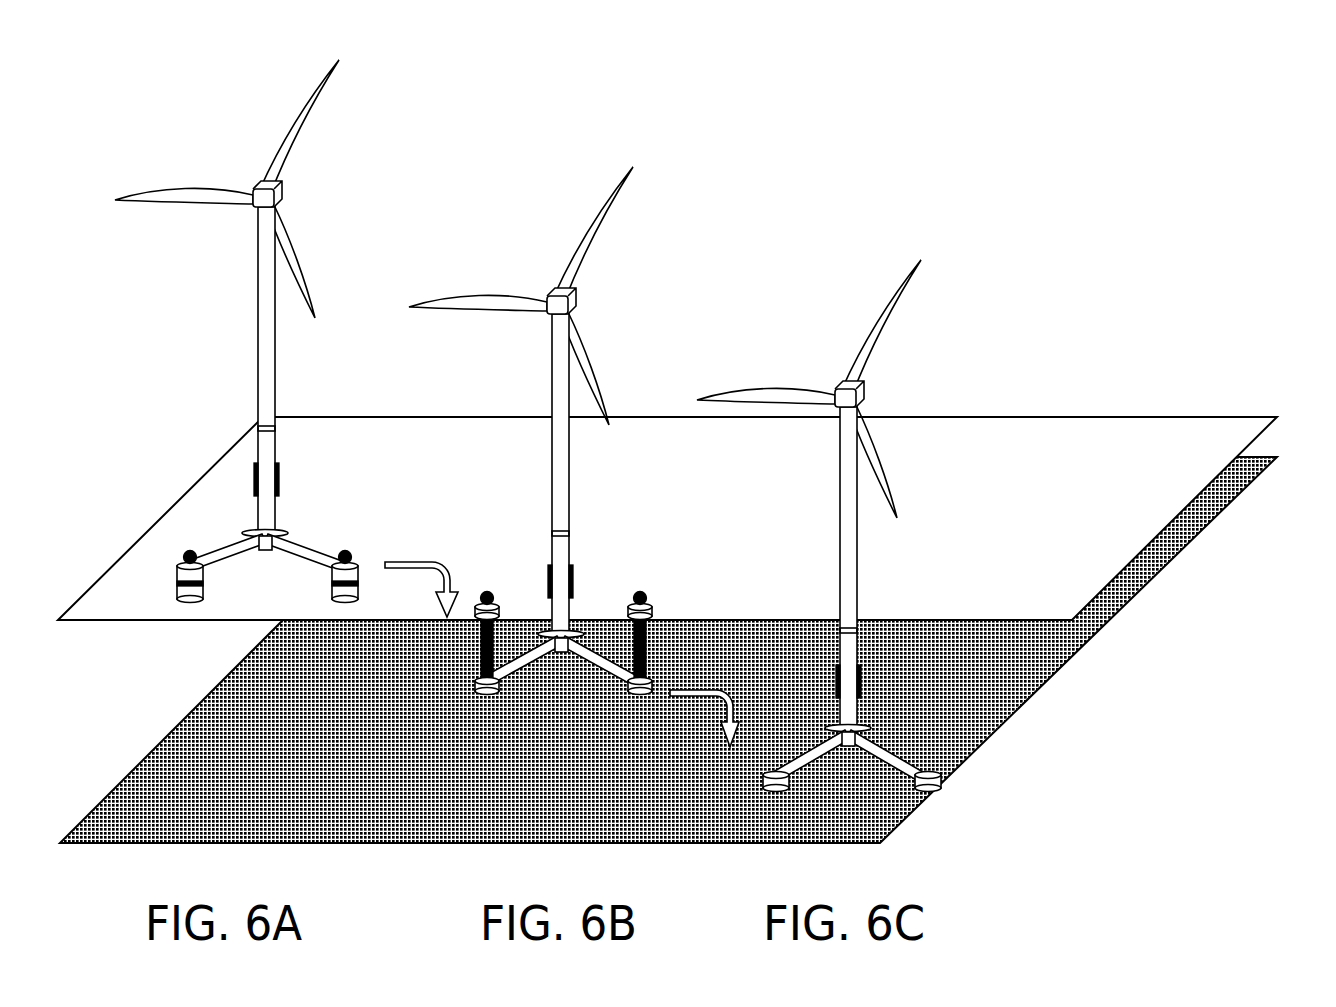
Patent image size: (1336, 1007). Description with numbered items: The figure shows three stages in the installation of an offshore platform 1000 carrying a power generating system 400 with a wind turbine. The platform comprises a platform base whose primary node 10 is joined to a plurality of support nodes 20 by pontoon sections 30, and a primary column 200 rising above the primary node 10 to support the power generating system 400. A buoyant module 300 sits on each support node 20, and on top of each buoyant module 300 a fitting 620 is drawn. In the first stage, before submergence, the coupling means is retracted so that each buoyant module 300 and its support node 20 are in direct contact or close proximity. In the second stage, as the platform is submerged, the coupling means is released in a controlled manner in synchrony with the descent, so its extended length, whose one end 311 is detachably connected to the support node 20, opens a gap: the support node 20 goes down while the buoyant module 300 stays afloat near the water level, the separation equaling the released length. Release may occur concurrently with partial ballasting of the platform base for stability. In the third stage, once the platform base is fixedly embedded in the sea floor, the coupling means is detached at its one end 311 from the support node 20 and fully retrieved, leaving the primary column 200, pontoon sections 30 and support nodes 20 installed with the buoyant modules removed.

In FIG. 6A, the offshore platform 1000 is at (279, 189).
In FIG. 6B, the offshore platform 1000 is at (565, 290).
In FIG. 6C, the offshore platform 1000 is at (809, 389).
In FIG. 6A, the power generating system 400 is at (316, 188).
In FIG. 6B, the power generating system 400 is at (612, 289).
In FIG. 6C, the power generating system 400 is at (901, 383).
In FIG. 6A, the primary column 200 is at (315, 369).
In FIG. 6B, the primary column 200 is at (604, 473).
In FIG. 6C, the primary column 200 is at (900, 567).
In FIG. 6A, the primary node 10 is at (290, 527).
In FIG. 6B, the primary node 10 is at (582, 612).
In FIG. 6C, the primary node 10 is at (868, 718).
In FIG. 6A, the pontoon sections 30 is at (286, 562).
In FIG. 6B, the pontoon sections 30 is at (582, 668).
In FIG. 6C, the pontoon sections 30 is at (866, 760).
In FIG. 6A, the support nodes 20 is at (172, 595).
In FIG. 6C, the support nodes 20 is at (762, 790).
In FIG. 6A, the buoyant modules 300 is at (180, 556).
In FIG. 6B, the buoyant modules 300 is at (496, 603).
In FIG. 6A, the mooring connector 620 is at (194, 550).
In FIG. 6B, the mooring connector 620 is at (486, 592).
In FIG. 6B, the one end of the coupling means 311 is at (478, 650).